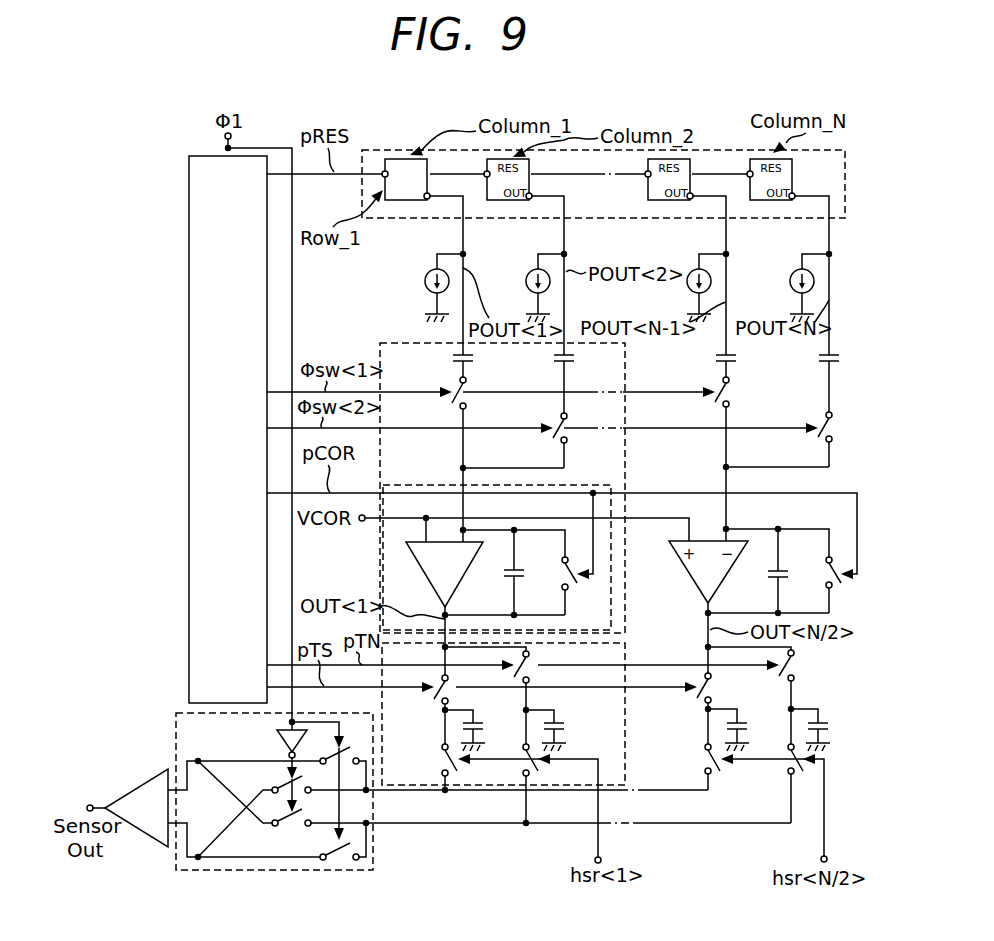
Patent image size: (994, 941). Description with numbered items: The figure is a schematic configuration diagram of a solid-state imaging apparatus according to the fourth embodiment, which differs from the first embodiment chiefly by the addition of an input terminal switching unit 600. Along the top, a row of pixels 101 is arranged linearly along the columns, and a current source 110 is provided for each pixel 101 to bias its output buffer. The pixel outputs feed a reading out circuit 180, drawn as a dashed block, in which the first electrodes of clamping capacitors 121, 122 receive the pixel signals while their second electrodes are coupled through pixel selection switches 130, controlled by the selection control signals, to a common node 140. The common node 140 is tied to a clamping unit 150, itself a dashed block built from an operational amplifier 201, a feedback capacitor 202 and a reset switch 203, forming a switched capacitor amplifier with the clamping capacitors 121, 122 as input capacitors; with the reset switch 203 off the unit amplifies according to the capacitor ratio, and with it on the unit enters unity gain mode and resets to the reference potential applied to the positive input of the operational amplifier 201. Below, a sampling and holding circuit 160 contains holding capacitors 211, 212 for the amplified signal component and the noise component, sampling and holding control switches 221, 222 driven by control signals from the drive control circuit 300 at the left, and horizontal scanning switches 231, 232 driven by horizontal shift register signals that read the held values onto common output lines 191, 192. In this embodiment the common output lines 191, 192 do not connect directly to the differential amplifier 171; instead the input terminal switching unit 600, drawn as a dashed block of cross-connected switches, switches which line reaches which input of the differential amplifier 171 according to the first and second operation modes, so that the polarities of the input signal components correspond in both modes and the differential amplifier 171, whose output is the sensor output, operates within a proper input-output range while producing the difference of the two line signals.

The drive control circuit 300 is at (206, 155).
The pixel 101 is at (427, 162).
The current source 110 is at (424, 281).
The clamping capacitor 121 is at (452, 357).
The clamping capacitor 122 is at (553, 357).
The pixel selection switch 130 is at (450, 389).
The common node 140 is at (462, 468).
The clamping unit 150 is at (589, 485).
The reading out circuit 180 is at (625, 588).
The sampling and holding circuit 160 is at (625, 727).
The differential amplifier 171 is at (140, 785).
The common output line 191 is at (427, 792).
The common output line 192 is at (442, 818).
The operational amplifier 201 is at (458, 580).
The feedback capacitor 202 is at (528, 569).
The reset switch 203 is at (571, 585).
The holding capacitor 211 is at (478, 723).
The holding capacitor 212 is at (556, 725).
The sampling and holding control switch 221 is at (438, 703).
The sampling and holding control switch 222 is at (530, 656).
The horizontal scanning switch 231 is at (446, 768).
The horizontal scanning switch 232 is at (540, 764).
The input terminal switching unit 600 is at (373, 852).